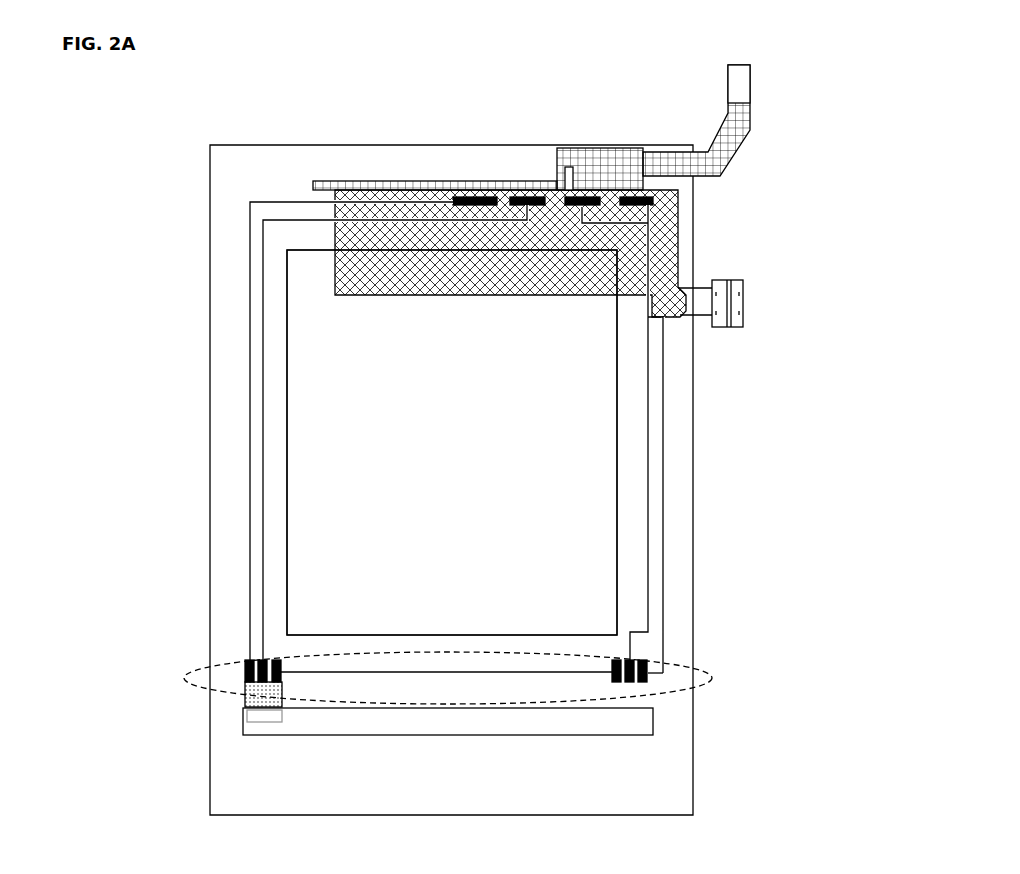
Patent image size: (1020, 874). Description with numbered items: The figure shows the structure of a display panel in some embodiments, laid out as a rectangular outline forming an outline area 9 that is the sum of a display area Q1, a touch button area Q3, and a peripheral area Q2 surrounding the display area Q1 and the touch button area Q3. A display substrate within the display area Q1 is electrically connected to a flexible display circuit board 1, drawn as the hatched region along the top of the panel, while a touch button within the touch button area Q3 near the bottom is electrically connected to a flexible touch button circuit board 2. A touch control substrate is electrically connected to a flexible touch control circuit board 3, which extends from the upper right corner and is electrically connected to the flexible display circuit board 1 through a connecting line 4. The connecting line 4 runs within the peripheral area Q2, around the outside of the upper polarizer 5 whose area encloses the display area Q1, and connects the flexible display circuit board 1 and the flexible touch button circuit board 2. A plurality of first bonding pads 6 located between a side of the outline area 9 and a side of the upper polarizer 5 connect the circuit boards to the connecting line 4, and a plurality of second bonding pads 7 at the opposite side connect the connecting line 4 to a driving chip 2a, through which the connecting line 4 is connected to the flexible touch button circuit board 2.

The flexible display circuit board 1 is at (407, 248).
The flexible touch button circuit board 2 is at (458, 720).
The driving chip 2a is at (265, 715).
The flexible touch control circuit board 3 is at (728, 150).
The connecting line 4 is at (246, 490).
The upper polarizer 5 is at (287, 332).
The first bonding pads 6 is at (593, 200).
The second bonding pads 7 is at (245, 670).
The outline area 9 is at (693, 503).
The display area Q1 is at (548, 440).
The peripheral area Q2 is at (675, 415).
The touch button area Q3 is at (540, 687).